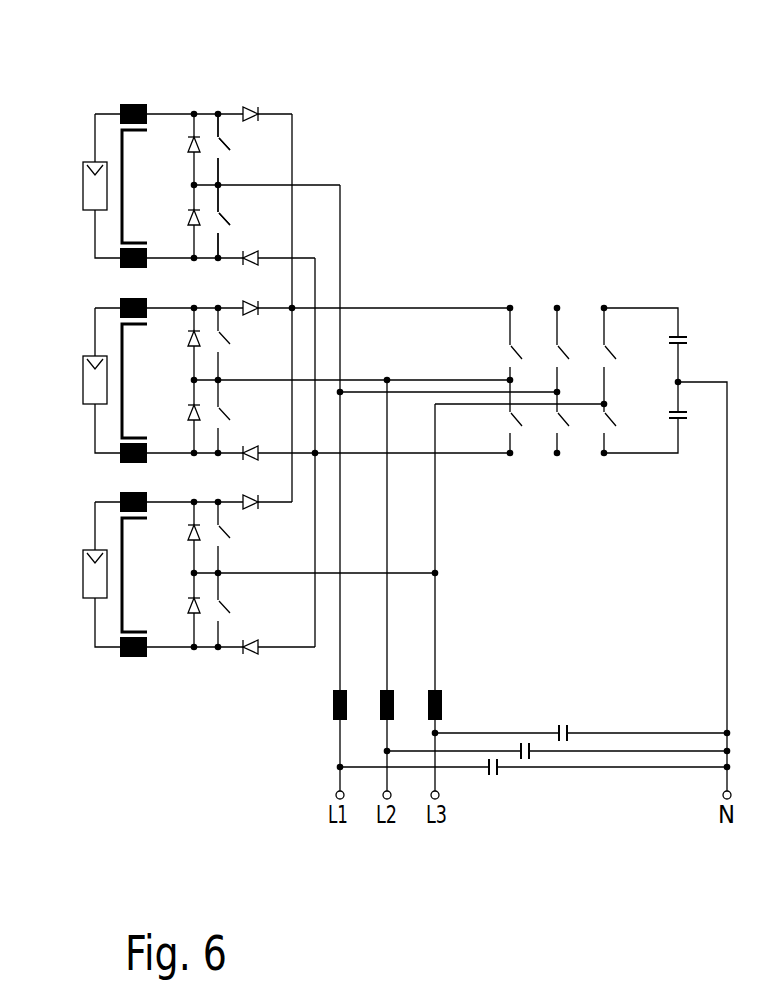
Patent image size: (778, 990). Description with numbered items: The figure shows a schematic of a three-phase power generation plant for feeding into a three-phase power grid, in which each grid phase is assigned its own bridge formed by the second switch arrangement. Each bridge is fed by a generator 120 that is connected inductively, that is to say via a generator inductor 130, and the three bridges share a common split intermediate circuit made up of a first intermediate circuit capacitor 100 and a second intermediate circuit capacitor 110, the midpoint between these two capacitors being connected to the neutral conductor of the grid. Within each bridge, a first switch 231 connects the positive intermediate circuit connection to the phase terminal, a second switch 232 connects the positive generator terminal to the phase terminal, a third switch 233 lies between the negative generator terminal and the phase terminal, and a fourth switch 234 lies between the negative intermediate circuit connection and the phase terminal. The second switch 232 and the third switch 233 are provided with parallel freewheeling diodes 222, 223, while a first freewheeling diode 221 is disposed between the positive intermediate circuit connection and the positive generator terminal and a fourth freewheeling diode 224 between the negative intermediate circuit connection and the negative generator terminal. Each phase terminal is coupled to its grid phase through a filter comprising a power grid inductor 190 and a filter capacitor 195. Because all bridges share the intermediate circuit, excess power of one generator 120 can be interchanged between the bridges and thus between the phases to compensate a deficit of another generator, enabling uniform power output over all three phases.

The first intermediate circuit capacitor 100 is at (681, 330).
The second intermediate circuit capacitor 110 is at (684, 420).
The generator 120 is at (83, 180).
The generator inductor 130 is at (133, 100).
The power grid inductor 190 is at (442, 688).
The filter capacitor 195 is at (563, 743).
The first freewheeling diode 221 is at (252, 107).
The freewheeling diode 222 is at (187, 143).
The freewheeling diode 223 is at (187, 217).
The fourth freewheeling diode 224 is at (244, 266).
The first switch 231 is at (563, 355).
The second switch 232 is at (232, 148).
The third switch 233 is at (232, 222).
The fourth switch 234 is at (562, 417).